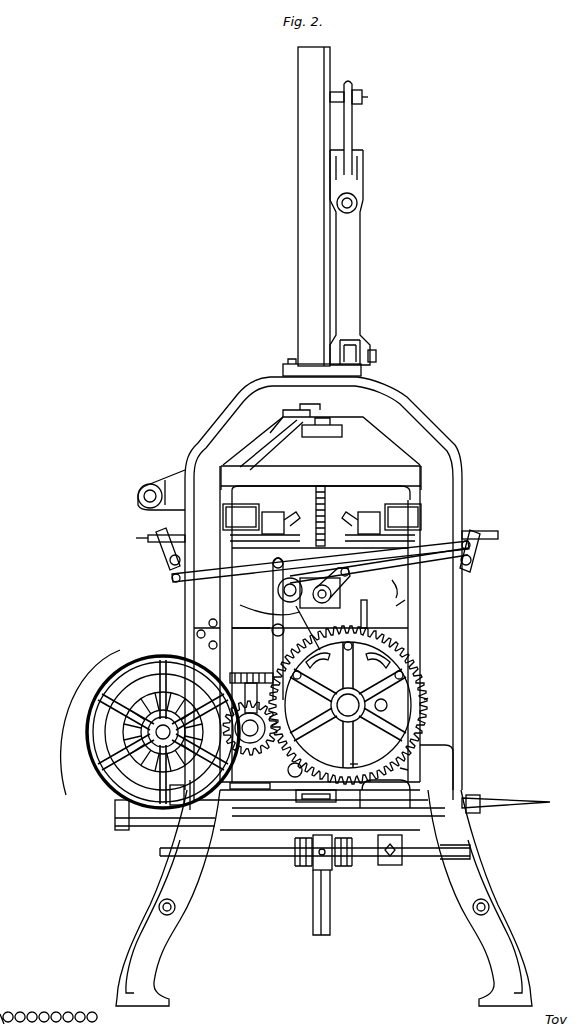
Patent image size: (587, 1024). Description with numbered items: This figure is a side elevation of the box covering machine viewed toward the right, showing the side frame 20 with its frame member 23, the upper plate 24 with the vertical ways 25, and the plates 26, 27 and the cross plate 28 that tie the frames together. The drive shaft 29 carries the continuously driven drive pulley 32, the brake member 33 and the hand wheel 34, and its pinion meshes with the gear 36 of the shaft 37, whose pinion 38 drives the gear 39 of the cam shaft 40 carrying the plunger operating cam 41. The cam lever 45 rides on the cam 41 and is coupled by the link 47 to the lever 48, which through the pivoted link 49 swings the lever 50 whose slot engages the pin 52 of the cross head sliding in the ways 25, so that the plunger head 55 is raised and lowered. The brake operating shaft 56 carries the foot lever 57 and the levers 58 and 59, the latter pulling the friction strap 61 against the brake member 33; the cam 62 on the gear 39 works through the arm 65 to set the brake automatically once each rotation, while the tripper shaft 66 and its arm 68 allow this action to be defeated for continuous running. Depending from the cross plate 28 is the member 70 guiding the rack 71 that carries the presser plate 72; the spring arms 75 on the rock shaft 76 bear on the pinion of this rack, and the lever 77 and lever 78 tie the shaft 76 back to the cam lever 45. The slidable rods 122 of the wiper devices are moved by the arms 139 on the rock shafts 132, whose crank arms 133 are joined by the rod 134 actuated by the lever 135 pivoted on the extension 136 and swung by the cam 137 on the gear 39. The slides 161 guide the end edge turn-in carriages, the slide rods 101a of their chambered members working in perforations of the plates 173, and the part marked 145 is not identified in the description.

The side frame 20 is at (500, 893).
The frame member 23 is at (428, 730).
The upper plate 24 is at (361, 374).
The vertical ways 25 is at (331, 70).
The plate 26 is at (358, 470).
The plate 27 is at (226, 563).
The cross plate 28 is at (420, 656).
The drive shaft 29 is at (126, 733).
The drive pulley 32 is at (86, 672).
The brake member 33 is at (120, 748).
The hand wheel 34 is at (90, 792).
The gear 36 is at (232, 800).
The shaft 37 is at (250, 738).
The pinion 38 is at (292, 770).
The gear 39 is at (428, 698).
The cam shaft 40 is at (408, 772).
The plunger operating cam 41 is at (390, 632).
The cam lever 45 is at (270, 616).
The link 47 is at (272, 440).
The lever 48 is at (230, 468).
The pivoted link 49 is at (361, 266).
The lever 50 is at (353, 132).
The pin 52 is at (364, 97).
The plunger head 55 is at (343, 432).
The brake operating shaft 56 is at (320, 834).
The foot lever 57 is at (514, 806).
The lever 58 is at (190, 776).
The lever 59 is at (118, 830).
The friction strap 61 is at (114, 810).
The cam 62 is at (361, 763).
The arm 65 is at (310, 806).
The shaft 66 is at (412, 800).
The arm 68 is at (336, 798).
The member 70 is at (332, 885).
The rack 71 is at (326, 497).
The presser plate 72 is at (318, 455).
The spring arms 75 is at (296, 822).
The rock shaft 76 is at (258, 862).
The lever 77 is at (396, 833).
The lever 78 is at (256, 790).
The slide rods 101a is at (342, 596).
The slidable rods 122 is at (148, 536).
The rock shafts 132 is at (170, 566).
The crank arms 133 is at (172, 584).
The rod 134 is at (430, 578).
The lever 135 is at (278, 590).
The extension 136 is at (222, 624).
The cam 137 is at (370, 612).
The arms 139 is at (133, 549).
The arm 145 is at (410, 605).
The slides 161 is at (292, 560).
The plates 173 is at (340, 566).